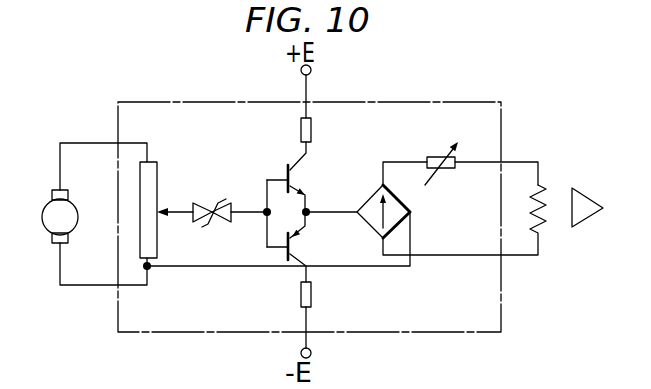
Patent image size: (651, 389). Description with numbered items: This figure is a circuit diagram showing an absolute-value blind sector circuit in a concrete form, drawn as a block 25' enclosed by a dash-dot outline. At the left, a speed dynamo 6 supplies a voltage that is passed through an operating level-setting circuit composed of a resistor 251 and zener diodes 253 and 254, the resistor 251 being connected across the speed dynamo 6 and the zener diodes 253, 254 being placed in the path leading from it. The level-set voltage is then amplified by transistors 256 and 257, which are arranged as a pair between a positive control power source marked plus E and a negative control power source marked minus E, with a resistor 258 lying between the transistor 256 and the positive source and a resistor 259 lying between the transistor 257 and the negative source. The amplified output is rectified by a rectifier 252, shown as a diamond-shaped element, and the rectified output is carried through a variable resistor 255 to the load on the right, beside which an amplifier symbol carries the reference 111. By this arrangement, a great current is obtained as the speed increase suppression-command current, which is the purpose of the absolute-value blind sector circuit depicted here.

The speed dynamo 6 is at (42, 223).
The motor control circuit 25' is at (308, 239).
The amplifier output 111 is at (600, 212).
The resistor 251 is at (157, 162).
The rectifier 252 is at (407, 203).
The zener diode 253 is at (200, 221).
The zener diode 254 is at (223, 198).
The variable resistor 255 is at (435, 157).
The transistor 256 is at (297, 168).
The transistor 257 is at (296, 254).
The resistor 258 is at (313, 129).
The resistor 259 is at (313, 296).